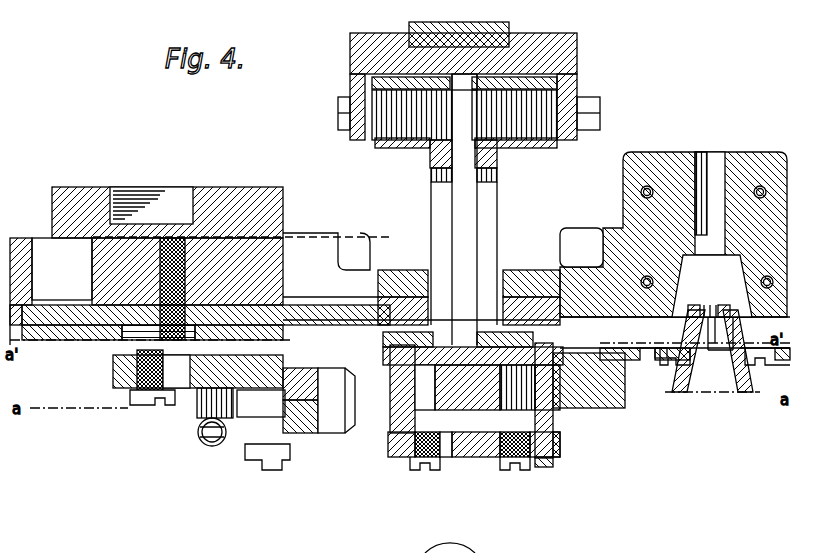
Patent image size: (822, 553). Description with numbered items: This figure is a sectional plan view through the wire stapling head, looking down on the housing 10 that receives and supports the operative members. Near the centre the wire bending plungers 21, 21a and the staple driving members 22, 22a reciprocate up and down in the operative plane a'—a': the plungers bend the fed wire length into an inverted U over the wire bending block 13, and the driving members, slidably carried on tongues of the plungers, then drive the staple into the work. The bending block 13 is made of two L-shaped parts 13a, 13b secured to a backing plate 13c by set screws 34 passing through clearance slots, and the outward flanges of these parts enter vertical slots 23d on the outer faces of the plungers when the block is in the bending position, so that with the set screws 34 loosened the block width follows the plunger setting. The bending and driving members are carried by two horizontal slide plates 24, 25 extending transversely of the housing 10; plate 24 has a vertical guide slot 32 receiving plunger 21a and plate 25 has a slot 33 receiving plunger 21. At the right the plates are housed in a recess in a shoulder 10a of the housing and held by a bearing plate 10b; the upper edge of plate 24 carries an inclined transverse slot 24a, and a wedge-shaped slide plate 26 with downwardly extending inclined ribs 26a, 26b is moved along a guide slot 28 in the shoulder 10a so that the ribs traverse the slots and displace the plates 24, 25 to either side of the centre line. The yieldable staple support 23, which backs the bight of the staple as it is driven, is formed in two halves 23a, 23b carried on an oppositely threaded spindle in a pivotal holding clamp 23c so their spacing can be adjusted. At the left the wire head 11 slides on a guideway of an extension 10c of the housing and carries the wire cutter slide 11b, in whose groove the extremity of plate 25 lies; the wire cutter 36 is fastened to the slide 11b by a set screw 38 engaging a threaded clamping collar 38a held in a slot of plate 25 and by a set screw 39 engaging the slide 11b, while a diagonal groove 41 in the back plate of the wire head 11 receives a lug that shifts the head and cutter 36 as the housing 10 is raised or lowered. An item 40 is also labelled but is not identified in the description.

The housing 10 is at (340, 234).
The shoulder 10a is at (712, 170).
The bearing plate 10b is at (774, 375).
The extension 10c is at (32, 240).
The wire head 11 is at (226, 187).
The wire cutter slide 11b is at (66, 345).
The wire bending block 13 is at (388, 415).
The bending block part 13a is at (402, 457).
The bending block part 13b is at (544, 460).
The backing plate 13c is at (553, 448).
The wire bending plunger 21 is at (422, 270).
The wire bending plunger 21a is at (525, 268).
The staple driving member 22 is at (463, 457).
The staple driving member 22a is at (483, 457).
The yieldable staple support 23 is at (460, 190).
The staple support half 23a is at (362, 82).
The staple support half 23b is at (560, 85).
The pivotal holding clamp 23c is at (540, 50).
The vertical slot 23d is at (386, 348).
The slide plate 24 is at (688, 310).
The transverse slot 24a is at (683, 330).
The slide plate 25 is at (330, 306).
The wedge-shaped slide plate 26 is at (727, 397).
The rib 26a is at (677, 394).
The rib 26b is at (740, 413).
The guide slot 28 is at (668, 156).
The vertical guide slot 32 is at (530, 285).
The vertical guide slot 33 is at (402, 285).
The set screws 34 is at (437, 468).
The wire cutter 36 is at (327, 422).
The set screw 38 is at (137, 408).
The threaded clamping collar 38a is at (113, 378).
The set screw 39 is at (247, 463).
The carriage lower block 40 is at (92, 348).
The diagonal groove 41 is at (152, 187).